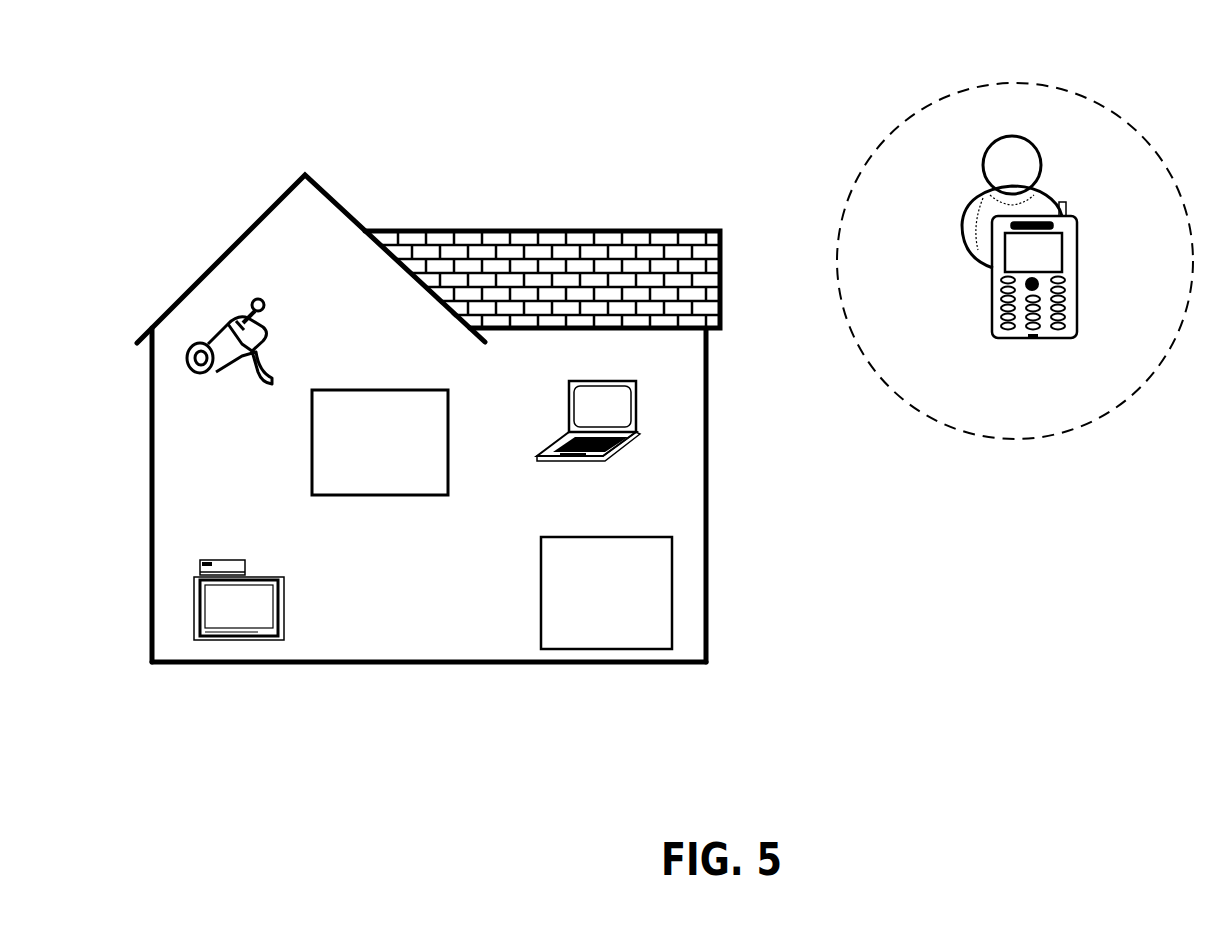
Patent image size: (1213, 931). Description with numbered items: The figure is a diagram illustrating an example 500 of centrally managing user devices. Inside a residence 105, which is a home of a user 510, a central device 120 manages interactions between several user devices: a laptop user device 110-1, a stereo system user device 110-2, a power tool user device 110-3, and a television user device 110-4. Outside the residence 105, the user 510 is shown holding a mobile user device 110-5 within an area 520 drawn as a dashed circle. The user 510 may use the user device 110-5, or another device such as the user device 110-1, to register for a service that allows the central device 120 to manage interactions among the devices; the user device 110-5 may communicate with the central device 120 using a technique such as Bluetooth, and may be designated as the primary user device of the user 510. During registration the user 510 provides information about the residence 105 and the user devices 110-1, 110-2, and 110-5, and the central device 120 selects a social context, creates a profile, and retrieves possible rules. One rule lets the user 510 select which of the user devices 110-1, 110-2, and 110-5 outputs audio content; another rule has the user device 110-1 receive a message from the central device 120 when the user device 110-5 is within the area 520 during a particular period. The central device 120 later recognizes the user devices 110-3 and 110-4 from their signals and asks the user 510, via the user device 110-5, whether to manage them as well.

The example 500 is at (196, 60).
The residence 105 is at (152, 400).
The central device 120 is at (380, 442).
The user device 110-1 is at (548, 450).
The user device 110-2 is at (541, 575).
The user device 110-3 is at (265, 334).
The user device 110-4 is at (282, 590).
The user device 110-5 is at (1078, 288).
The user 510 is at (963, 222).
The area 520 is at (845, 178).